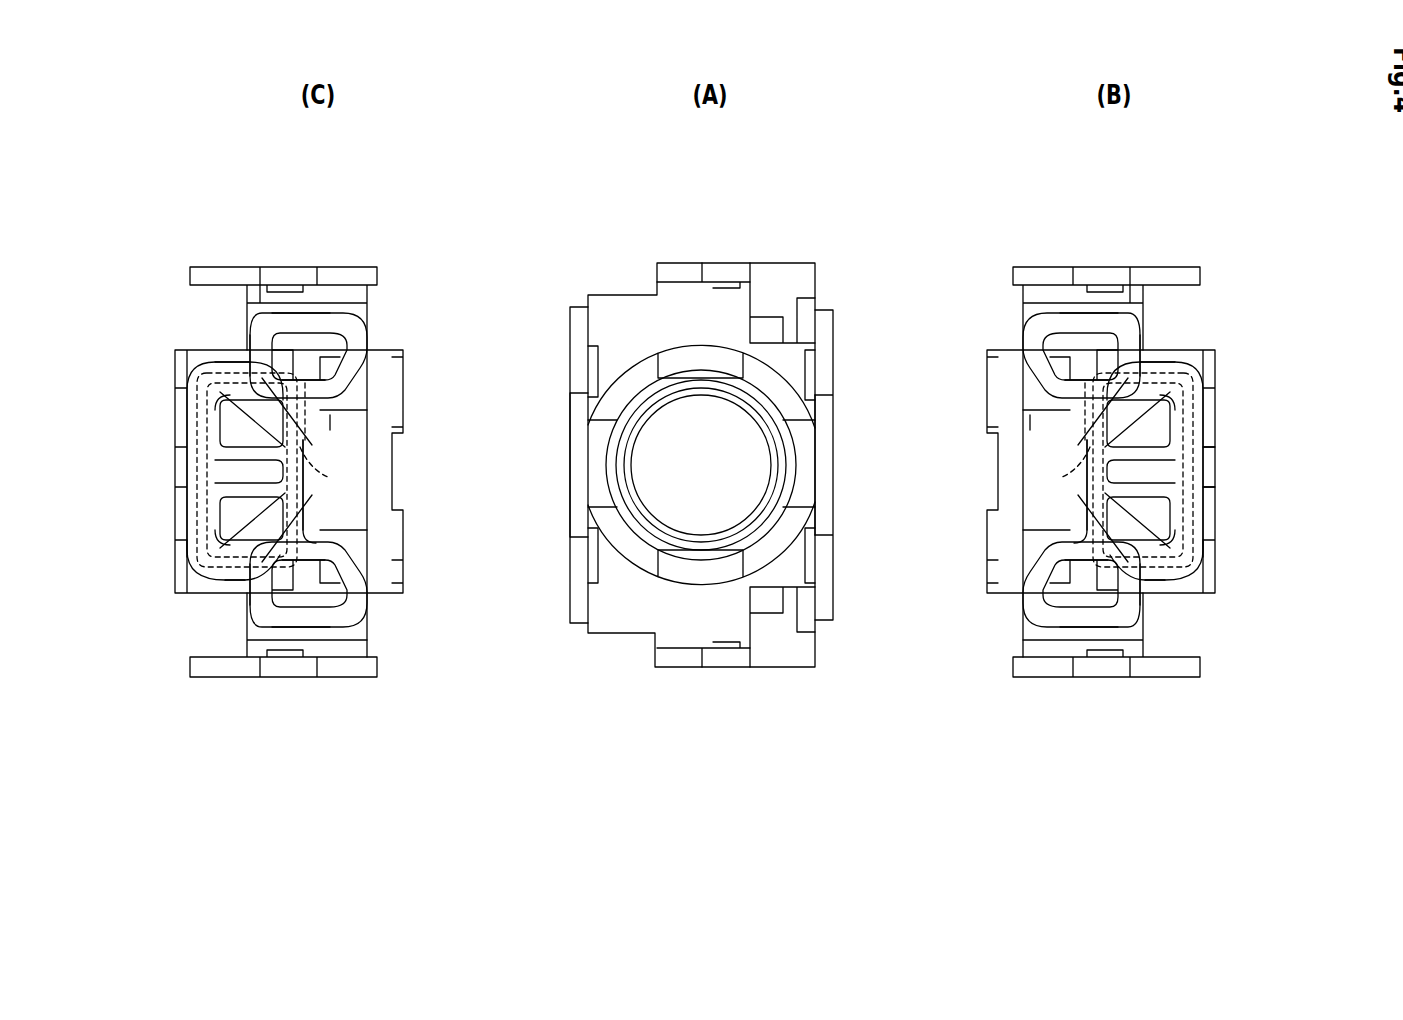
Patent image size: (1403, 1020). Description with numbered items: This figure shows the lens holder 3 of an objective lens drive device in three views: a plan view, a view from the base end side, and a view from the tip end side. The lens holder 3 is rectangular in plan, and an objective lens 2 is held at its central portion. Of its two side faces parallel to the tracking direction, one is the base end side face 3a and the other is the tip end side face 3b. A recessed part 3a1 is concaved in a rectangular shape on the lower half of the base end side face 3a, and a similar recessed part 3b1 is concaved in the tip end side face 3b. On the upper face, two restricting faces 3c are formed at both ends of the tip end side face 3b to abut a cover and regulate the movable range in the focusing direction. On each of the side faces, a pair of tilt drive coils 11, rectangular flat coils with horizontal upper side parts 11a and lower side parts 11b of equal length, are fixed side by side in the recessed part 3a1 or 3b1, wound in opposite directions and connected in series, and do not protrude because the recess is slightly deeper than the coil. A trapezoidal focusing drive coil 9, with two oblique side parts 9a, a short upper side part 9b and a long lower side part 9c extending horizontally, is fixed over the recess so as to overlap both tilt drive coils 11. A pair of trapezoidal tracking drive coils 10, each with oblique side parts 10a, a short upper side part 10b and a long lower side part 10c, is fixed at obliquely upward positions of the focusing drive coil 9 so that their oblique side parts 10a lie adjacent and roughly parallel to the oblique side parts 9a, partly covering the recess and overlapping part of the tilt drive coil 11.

The objective lens 2 is at (700, 510).
The lens holder 3 is at (375, 580).
The base end side face 3a is at (357, 425).
The recessed part 3a1 is at (227, 467).
The tip end side face 3b is at (1040, 423).
The recessed part 3b1 is at (1060, 503).
The restricting face 3c is at (787, 275).
The focusing drive coil 9 is at (188, 472).
The oblique side part 9a is at (222, 400).
The upper side part 9b is at (340, 485).
The lower side part 9c is at (270, 560).
The tracking drive coil 10 is at (318, 322).
The oblique side part 10a is at (268, 352).
The upper side part 10b is at (285, 323).
The lower side part 10c is at (313, 383).
The tilt drive coil 11 is at (237, 452).
The upper side part 11a is at (310, 445).
The lower side part 11b is at (217, 420).